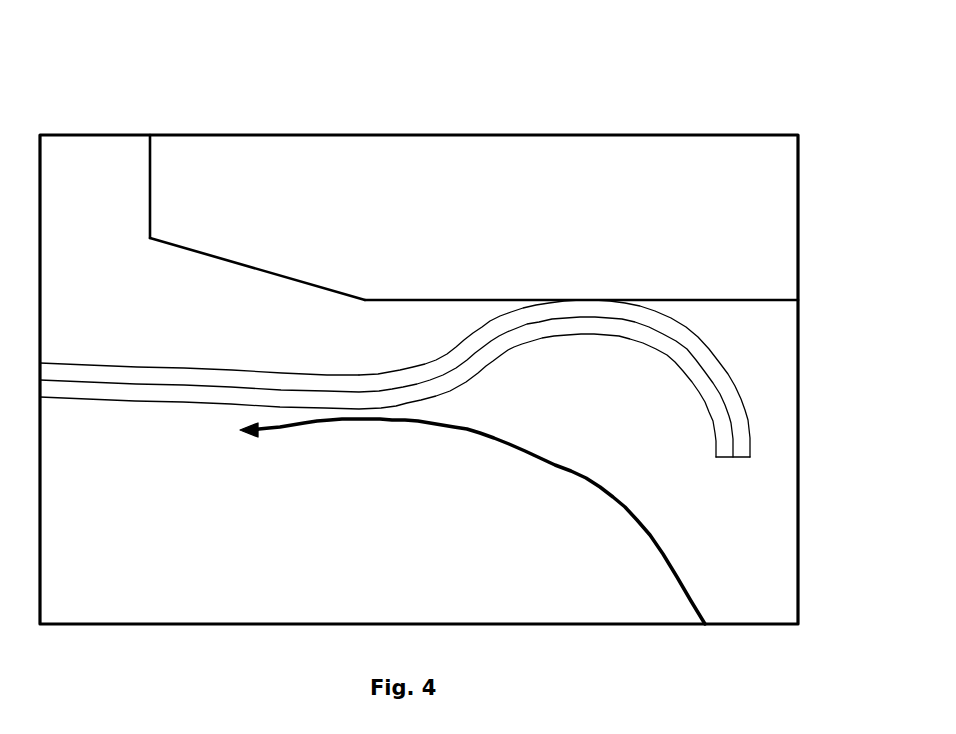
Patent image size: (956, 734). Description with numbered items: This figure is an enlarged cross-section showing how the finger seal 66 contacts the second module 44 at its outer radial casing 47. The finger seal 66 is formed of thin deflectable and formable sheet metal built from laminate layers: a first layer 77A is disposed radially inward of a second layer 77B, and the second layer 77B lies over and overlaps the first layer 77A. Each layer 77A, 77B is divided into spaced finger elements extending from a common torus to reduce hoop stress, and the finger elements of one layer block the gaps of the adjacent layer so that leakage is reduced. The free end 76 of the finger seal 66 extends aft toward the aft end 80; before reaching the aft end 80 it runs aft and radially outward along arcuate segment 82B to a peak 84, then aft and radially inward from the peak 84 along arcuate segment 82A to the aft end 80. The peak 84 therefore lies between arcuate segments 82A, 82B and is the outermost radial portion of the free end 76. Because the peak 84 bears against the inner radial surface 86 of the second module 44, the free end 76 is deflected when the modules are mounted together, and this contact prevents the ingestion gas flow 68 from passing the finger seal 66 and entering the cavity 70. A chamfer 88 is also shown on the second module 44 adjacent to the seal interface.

The second module 44 is at (456, 166).
The outer radial casing 47 is at (581, 214).
The finger seal 66 is at (91, 323).
The ingestion gas flow 68 is at (593, 480).
The cavity 70 is at (110, 192).
The free end 76 is at (151, 406).
The first layer 77A is at (216, 397).
The second layer 77B is at (186, 377).
The aft end 80 is at (728, 458).
The arcuate segment 82A is at (733, 366).
The arcuate segment 82B is at (453, 345).
The peak 84 is at (600, 302).
The inner radial surface 86 is at (737, 298).
The chamfer 88 is at (262, 269).